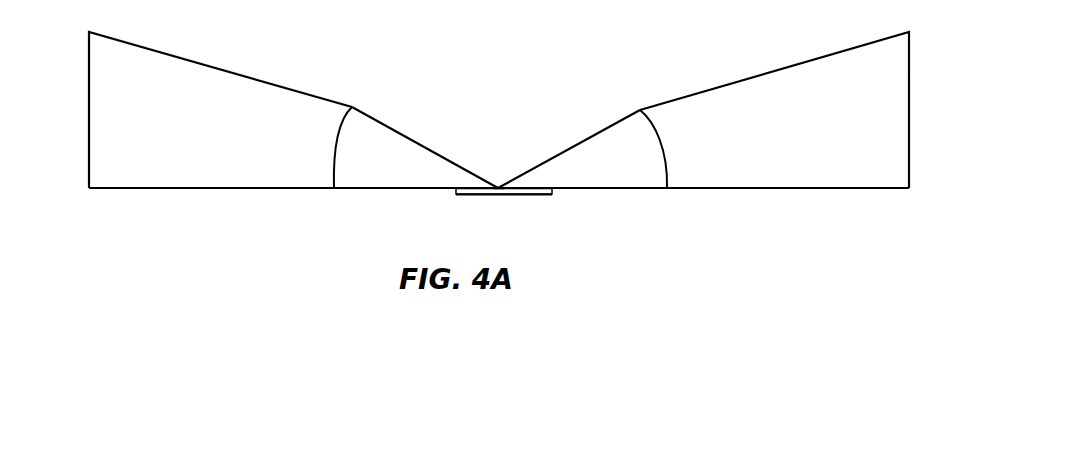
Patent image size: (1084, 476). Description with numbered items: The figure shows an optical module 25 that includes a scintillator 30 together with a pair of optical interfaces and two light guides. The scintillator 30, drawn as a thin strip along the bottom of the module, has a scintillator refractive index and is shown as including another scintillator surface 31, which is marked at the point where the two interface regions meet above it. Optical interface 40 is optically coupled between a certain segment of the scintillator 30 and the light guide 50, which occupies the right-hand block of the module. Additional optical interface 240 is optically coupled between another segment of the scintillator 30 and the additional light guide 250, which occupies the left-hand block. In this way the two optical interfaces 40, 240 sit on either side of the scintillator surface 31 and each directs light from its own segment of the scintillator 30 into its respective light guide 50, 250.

The optical module 25 is at (499, 223).
The scintillator 30 is at (456, 195).
The scintillator surface 31 is at (500, 194).
The optical interface 40 is at (569, 149).
The light guide 50 is at (774, 110).
The additional optical interface 240 is at (425, 147).
The additional light guide 250 is at (220, 110).